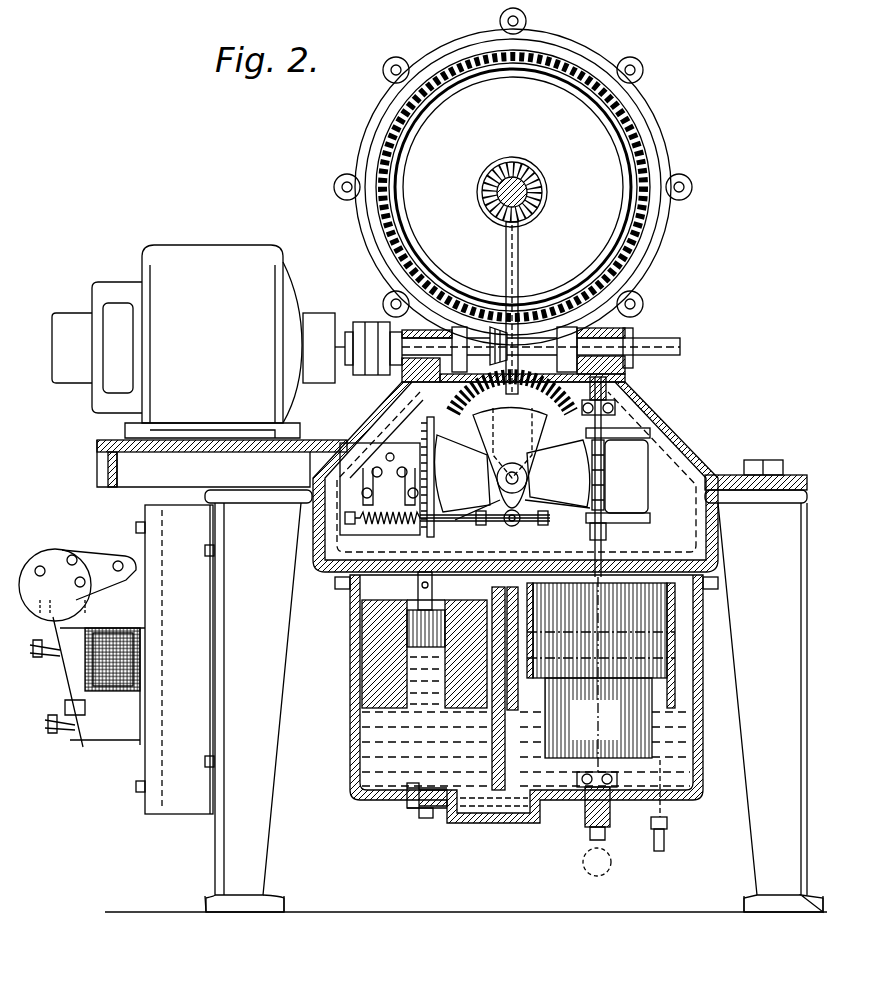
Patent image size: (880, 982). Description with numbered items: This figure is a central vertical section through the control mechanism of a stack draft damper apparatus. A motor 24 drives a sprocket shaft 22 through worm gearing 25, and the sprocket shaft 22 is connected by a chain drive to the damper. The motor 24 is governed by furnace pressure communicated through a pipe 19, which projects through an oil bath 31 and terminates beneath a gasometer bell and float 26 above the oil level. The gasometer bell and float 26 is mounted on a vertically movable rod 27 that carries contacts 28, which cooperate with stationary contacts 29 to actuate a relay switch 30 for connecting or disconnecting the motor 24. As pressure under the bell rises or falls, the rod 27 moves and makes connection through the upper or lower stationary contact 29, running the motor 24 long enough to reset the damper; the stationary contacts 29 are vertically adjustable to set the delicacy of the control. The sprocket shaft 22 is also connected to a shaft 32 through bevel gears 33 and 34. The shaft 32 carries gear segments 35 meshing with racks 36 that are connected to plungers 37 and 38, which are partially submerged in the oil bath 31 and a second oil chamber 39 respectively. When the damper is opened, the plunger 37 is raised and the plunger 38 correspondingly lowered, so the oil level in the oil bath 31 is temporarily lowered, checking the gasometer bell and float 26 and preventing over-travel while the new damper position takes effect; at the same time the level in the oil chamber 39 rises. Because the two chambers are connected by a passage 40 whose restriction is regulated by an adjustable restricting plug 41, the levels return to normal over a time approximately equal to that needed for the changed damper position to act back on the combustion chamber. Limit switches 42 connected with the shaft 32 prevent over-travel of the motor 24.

The pipe 19 is at (668, 840).
The sprocket shaft 22 is at (540, 180).
The motor 24 is at (193, 341).
The worm gearing 25 is at (522, 330).
The gasometer bell and float 26 is at (598, 674).
The vertically movable rod 27 is at (590, 815).
The contacts 28 is at (615, 477).
The stationary contacts 29 is at (628, 432).
The relay switch 30 is at (75, 560).
The oil bath 31 is at (678, 752).
The shaft 32 is at (508, 482).
The bevel gear 33 is at (530, 214).
The bevel gear 34 is at (512, 405).
The gear segments 35 is at (487, 470).
The racks 36 is at (434, 438).
The plunger 37 is at (678, 663).
The plunger 38 is at (364, 661).
The oil chamber 39 is at (380, 748).
The passage 40 is at (495, 824).
The adjustable restricting plug 41 is at (446, 818).
The limit switches 42 is at (380, 489).